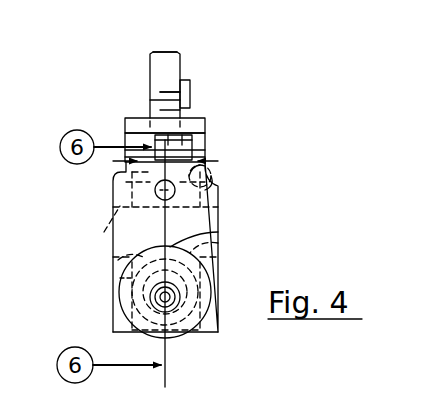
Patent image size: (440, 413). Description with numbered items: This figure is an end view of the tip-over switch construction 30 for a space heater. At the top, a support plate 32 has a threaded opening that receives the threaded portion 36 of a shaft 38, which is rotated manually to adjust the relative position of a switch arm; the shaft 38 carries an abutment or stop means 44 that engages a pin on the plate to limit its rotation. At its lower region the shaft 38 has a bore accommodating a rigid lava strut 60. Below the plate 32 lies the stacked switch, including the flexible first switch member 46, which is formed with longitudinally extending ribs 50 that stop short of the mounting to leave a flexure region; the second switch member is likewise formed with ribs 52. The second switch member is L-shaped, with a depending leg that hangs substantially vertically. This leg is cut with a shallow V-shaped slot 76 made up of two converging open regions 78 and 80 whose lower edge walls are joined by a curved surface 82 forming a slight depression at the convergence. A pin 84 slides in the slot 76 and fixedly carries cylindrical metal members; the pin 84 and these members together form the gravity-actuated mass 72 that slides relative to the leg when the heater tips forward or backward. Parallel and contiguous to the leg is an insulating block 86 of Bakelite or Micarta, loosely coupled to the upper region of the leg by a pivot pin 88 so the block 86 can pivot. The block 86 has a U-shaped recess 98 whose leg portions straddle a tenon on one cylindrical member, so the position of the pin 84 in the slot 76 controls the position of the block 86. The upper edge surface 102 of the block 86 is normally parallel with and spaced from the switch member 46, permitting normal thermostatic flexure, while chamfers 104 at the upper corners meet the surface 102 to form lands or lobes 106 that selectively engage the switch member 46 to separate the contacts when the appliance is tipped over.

The switch construction 30 is at (226, 219).
The plate 32 is at (199, 128).
The threaded portion 36 is at (183, 90).
The shaft 38 is at (167, 52).
The abutment or stop means 44 is at (193, 110).
The first switch member 46 is at (205, 145).
The ribs 50 is at (205, 158).
The ribs 52 is at (103, 233).
The strut 60 is at (195, 125).
The gravity-actuated mass 72 is at (185, 350).
The slot 76 is at (120, 278).
The open region 78 is at (110, 259).
The open region 80 is at (220, 252).
The curved surface 82 is at (195, 340).
The pin 84 is at (178, 298).
The insulating block 86 is at (220, 243).
The pivot pin 88 is at (174, 194).
The U-shaped recess 98 is at (220, 232).
The upper edge surface 102 is at (203, 129).
The chamfers 104 is at (206, 166).
The lands or lobes 106 is at (217, 194).